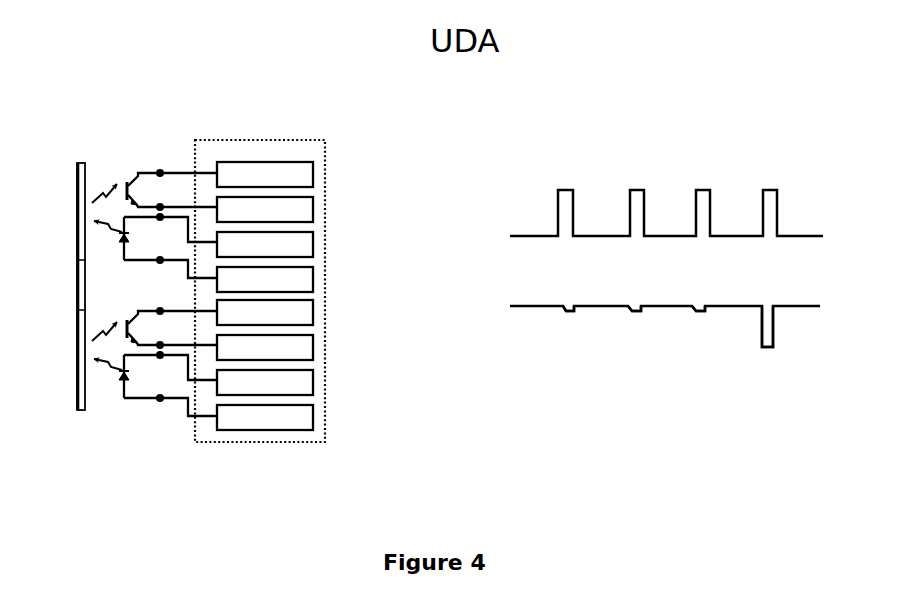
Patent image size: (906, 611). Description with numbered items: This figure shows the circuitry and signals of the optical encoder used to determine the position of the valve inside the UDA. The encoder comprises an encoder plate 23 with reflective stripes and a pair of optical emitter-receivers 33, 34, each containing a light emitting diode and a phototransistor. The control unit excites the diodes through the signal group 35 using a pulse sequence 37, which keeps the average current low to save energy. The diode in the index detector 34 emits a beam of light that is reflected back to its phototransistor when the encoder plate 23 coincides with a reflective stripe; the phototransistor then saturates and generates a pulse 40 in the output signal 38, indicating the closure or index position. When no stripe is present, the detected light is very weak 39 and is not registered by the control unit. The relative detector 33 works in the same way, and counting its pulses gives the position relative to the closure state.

The encoder plate 23 is at (67, 331).
The relative optical detector 33 is at (134, 412).
The index optical detector 34 is at (150, 165).
The signal group 35 is at (289, 138).
The pulse sequence 37 is at (553, 197).
The output signal 38 is at (539, 291).
The weak light signal 39 is at (709, 331).
The pulse 40 is at (767, 356).